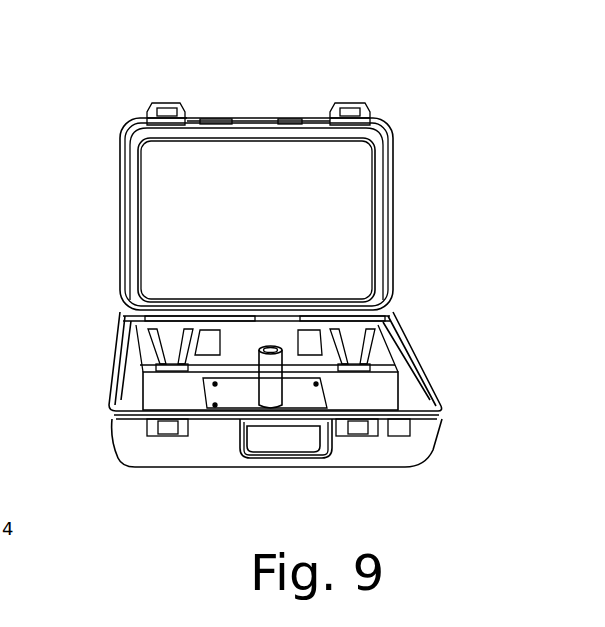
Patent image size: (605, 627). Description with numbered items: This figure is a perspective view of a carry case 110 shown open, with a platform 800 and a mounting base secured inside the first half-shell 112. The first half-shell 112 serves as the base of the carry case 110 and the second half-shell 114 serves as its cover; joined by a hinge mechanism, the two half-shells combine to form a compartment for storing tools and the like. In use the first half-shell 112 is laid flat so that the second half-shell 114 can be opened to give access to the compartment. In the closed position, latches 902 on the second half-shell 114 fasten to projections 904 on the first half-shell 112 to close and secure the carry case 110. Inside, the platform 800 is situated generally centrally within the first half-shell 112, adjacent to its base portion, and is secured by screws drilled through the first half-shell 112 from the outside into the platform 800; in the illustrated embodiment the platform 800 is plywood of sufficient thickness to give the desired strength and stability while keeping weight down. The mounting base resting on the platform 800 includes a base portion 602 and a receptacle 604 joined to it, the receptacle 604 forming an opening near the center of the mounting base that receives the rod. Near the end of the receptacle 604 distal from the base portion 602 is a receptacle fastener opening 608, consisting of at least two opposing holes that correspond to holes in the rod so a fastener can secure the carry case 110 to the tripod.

The carry case 110 is at (331, 42).
The second half-shell 114 is at (121, 193).
The latches 902 is at (167, 105).
The first half-shell 112 is at (381, 462).
The projections 904 is at (166, 432).
The receptacle fastener opening 608 is at (195, 352).
The platform 800 is at (142, 385).
The base portion 602 is at (328, 402).
The receptacle 604 is at (283, 353).